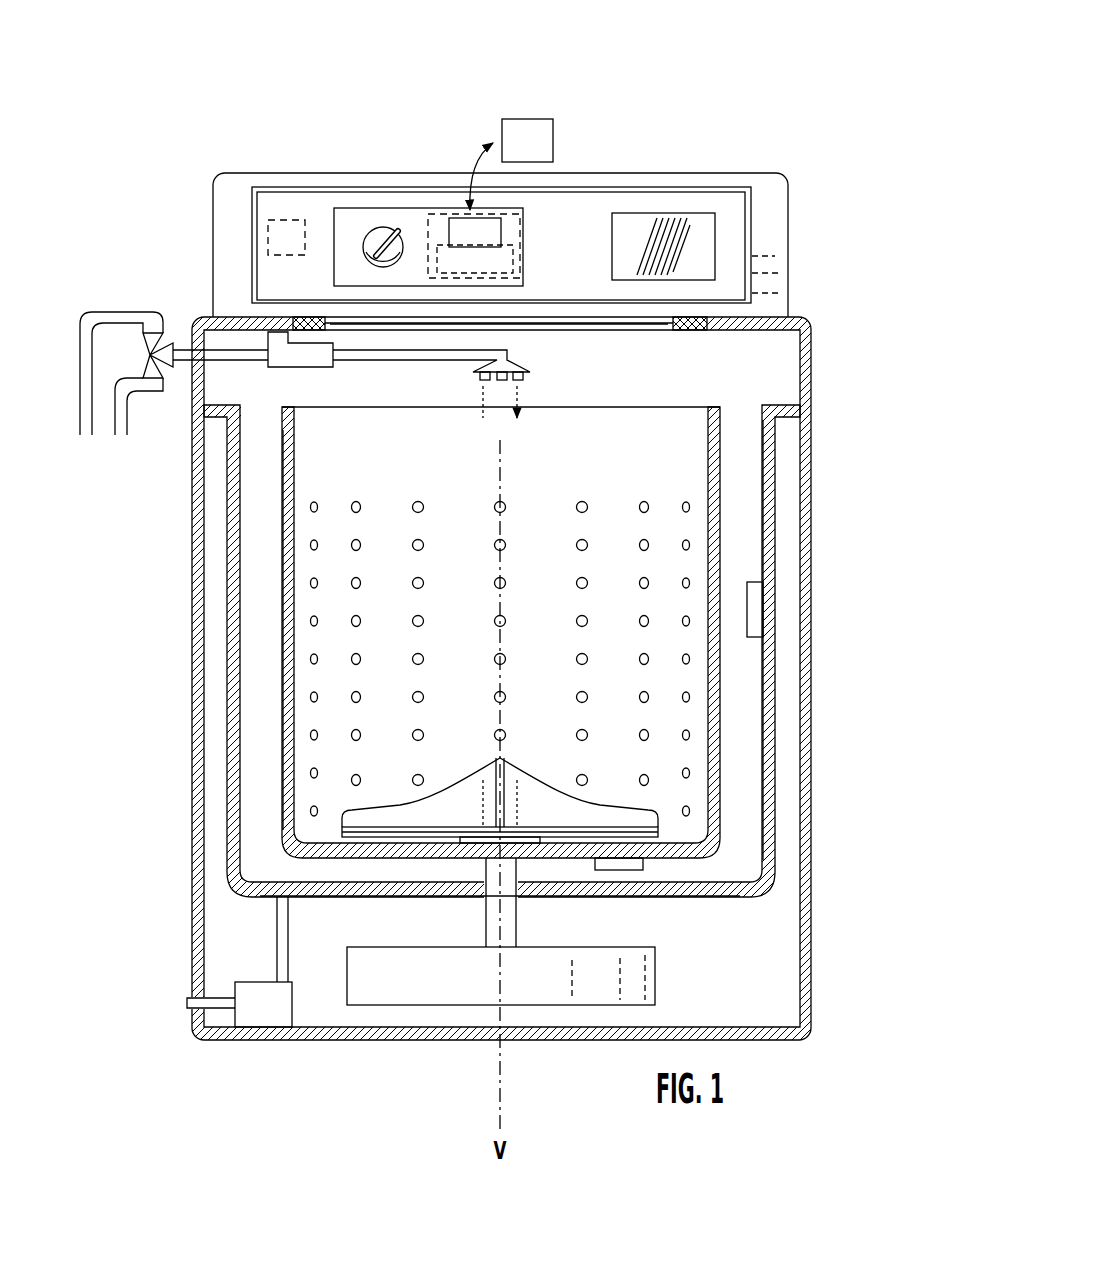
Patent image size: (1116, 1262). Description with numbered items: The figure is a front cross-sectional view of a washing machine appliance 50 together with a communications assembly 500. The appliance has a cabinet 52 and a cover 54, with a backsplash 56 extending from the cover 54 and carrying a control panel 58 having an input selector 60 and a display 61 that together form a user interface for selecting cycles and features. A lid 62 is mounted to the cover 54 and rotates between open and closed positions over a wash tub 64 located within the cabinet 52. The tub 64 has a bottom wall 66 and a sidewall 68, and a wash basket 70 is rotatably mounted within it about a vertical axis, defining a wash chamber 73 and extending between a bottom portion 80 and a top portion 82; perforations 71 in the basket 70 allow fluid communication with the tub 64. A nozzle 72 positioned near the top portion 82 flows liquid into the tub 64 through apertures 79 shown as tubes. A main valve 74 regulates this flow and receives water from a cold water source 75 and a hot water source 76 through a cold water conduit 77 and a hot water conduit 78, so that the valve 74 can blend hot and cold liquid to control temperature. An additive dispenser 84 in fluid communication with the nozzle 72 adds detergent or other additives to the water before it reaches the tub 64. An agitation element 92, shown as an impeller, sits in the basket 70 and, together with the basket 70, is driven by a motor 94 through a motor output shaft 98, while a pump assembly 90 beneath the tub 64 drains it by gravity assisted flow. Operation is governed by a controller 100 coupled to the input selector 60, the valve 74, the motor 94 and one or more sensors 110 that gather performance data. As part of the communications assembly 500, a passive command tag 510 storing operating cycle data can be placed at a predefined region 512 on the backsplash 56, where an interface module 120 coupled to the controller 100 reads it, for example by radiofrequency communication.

The washing machine appliance 50 is at (247, 88).
The communications assembly 500 is at (718, 62).
The cabinet 52 is at (812, 968).
The cover 54 is at (769, 308).
The backsplash 56 is at (603, 205).
The control panel 58 is at (415, 216).
The input selector 60 is at (389, 216).
The display 61 is at (640, 228).
The lid 62 is at (677, 306).
The wash tub 64 is at (777, 690).
The bottom wall 66 is at (711, 880).
The sidewall 68 is at (778, 547).
The wash basket 70 is at (722, 437).
The perforations 71 is at (349, 660).
The nozzle 72 is at (540, 356).
The wash chamber 73 is at (647, 450).
The main valve 74 is at (171, 330).
The cold water source 75 is at (85, 443).
The hot water source 76 is at (122, 443).
The cold water conduit 77 is at (80, 370).
The hot water conduit 78 is at (130, 406).
The apertures 79 is at (480, 378).
The bottom portion 80 is at (284, 843).
The top portion 82 is at (301, 432).
The additive dispenser 84 is at (326, 384).
The pump assembly 90 is at (251, 1006).
The agitation element 92 is at (506, 760).
The motor 94 is at (406, 972).
The motor output shaft 98 is at (511, 898).
The controller 100 is at (277, 218).
The sensors 110 is at (757, 640).
The interface module 120 is at (458, 213).
The passive command tag 510 is at (541, 118).
The predefined region 512 is at (514, 262).